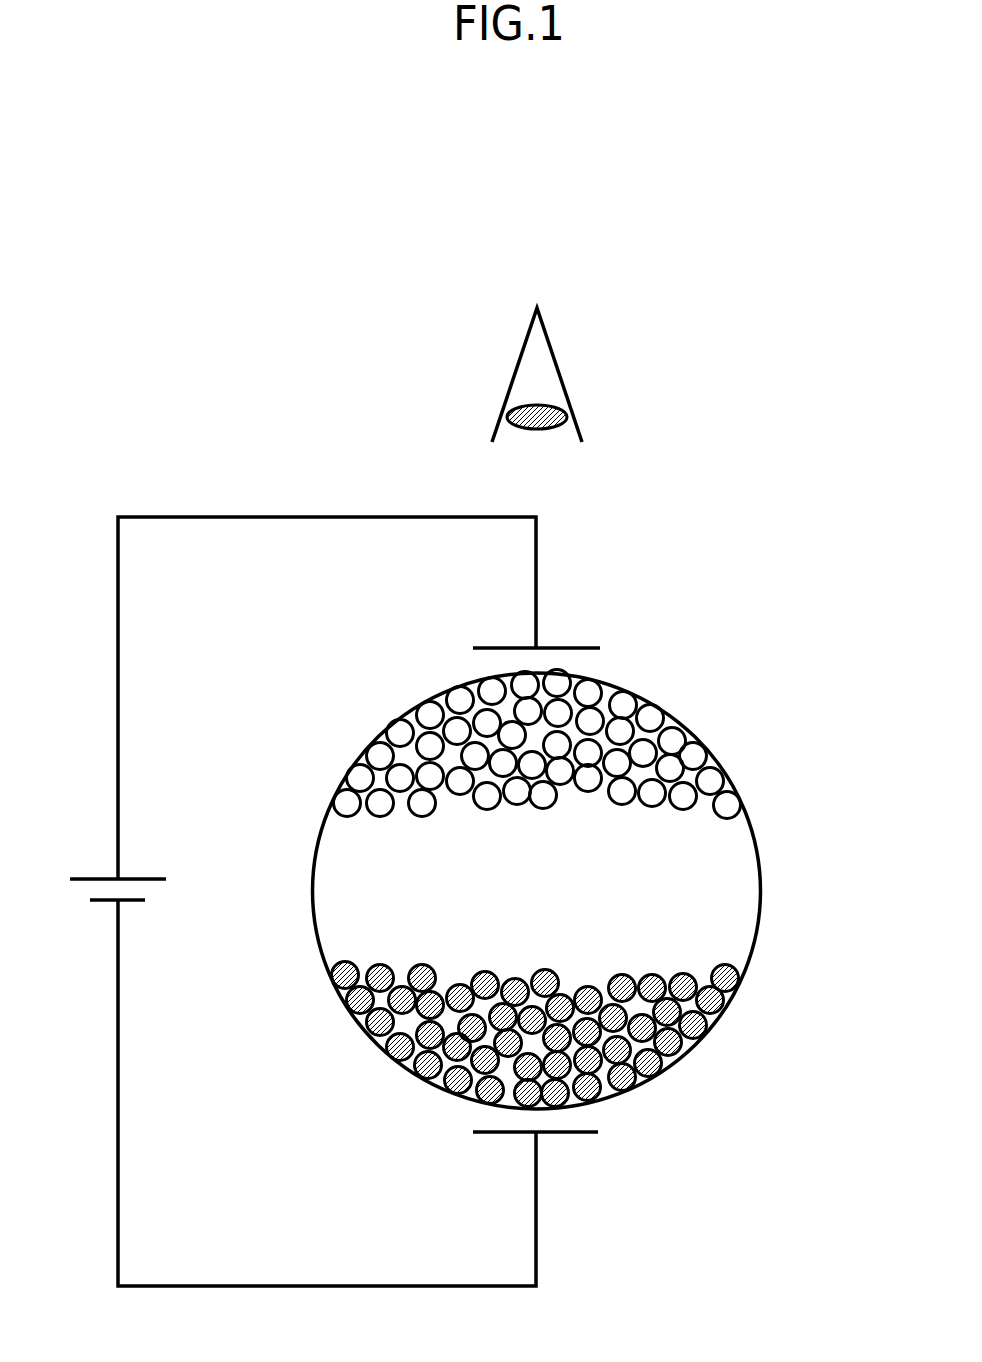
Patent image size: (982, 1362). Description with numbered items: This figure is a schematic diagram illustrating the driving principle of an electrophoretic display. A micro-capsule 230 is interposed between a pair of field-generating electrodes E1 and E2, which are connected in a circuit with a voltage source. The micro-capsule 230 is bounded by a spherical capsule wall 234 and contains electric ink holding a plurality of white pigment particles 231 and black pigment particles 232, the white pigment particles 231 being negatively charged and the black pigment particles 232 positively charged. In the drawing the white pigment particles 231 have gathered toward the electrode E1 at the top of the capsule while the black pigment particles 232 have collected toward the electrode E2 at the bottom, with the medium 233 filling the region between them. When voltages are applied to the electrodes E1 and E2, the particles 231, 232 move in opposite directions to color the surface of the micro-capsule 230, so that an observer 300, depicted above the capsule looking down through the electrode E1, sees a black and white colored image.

The observer 300 is at (577, 400).
The micro-capsule 230 is at (586, 890).
The white pigment particles 231 is at (728, 803).
The black pigment particles 232 is at (743, 973).
The dispersion fluid 233 is at (735, 852).
The capsule wall 234 is at (761, 893).
The electrode E1 is at (538, 615).
The electrode E2 is at (538, 1159).